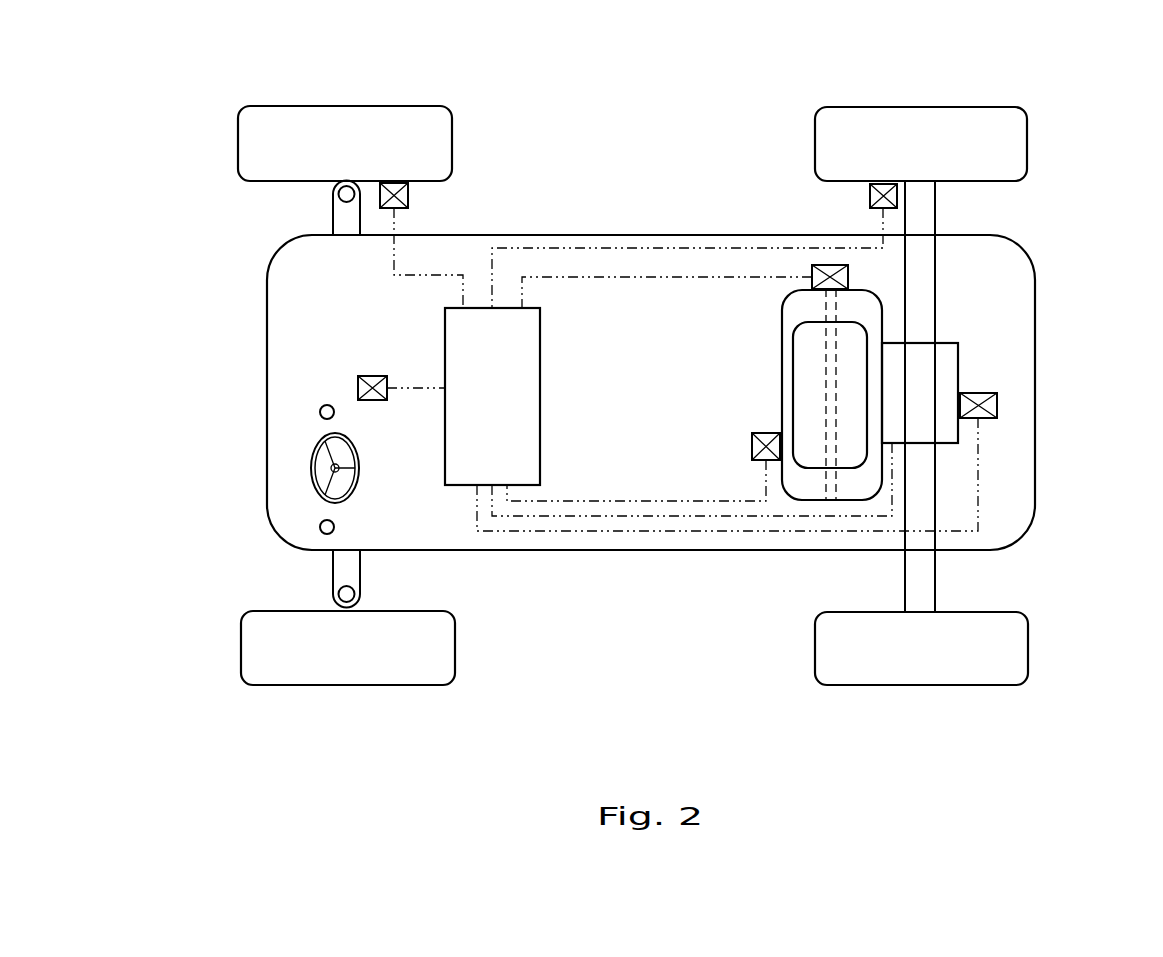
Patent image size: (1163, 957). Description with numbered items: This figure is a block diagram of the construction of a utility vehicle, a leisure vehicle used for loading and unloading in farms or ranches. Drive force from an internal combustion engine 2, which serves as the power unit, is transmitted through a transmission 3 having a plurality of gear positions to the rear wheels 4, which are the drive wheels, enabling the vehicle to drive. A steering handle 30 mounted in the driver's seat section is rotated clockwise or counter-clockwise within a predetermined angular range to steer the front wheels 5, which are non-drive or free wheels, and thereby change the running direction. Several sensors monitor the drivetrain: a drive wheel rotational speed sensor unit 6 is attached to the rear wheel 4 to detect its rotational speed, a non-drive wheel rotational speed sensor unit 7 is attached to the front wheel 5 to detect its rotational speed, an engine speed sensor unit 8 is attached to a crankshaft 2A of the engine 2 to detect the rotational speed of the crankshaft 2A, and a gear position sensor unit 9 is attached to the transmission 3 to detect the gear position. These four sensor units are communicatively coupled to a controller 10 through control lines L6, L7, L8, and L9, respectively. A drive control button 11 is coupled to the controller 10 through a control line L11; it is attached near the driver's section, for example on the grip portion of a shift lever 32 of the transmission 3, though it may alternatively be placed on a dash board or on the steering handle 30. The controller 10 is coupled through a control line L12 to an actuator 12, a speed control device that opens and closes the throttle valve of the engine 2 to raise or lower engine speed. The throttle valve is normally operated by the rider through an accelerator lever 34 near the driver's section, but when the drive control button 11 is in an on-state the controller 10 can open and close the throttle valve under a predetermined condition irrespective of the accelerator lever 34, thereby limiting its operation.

The engine 2 is at (802, 487).
The crankshaft 2A is at (837, 310).
The transmission 3 is at (945, 363).
The rear wheels 4 is at (919, 125).
The front wheels 5 is at (338, 118).
The drive wheel rotational speed sensor unit 6 is at (870, 196).
The non-drive wheel rotational speed sensor unit 7 is at (408, 196).
The engine speed sensor unit 8 is at (818, 265).
The gear position sensor unit 9 is at (997, 406).
The controller 10 is at (455, 465).
The drive control button 11 is at (358, 388).
The actuator 12 is at (752, 460).
The steering handle 30 is at (310, 468).
The shift lever 32 is at (320, 527).
The accelerator lever 34 is at (320, 412).
The control line L6 is at (565, 248).
The control line L7 is at (394, 263).
The control line L8 is at (630, 278).
The control line L9 is at (978, 482).
The control line L11 is at (420, 388).
The control line L12 is at (615, 501).